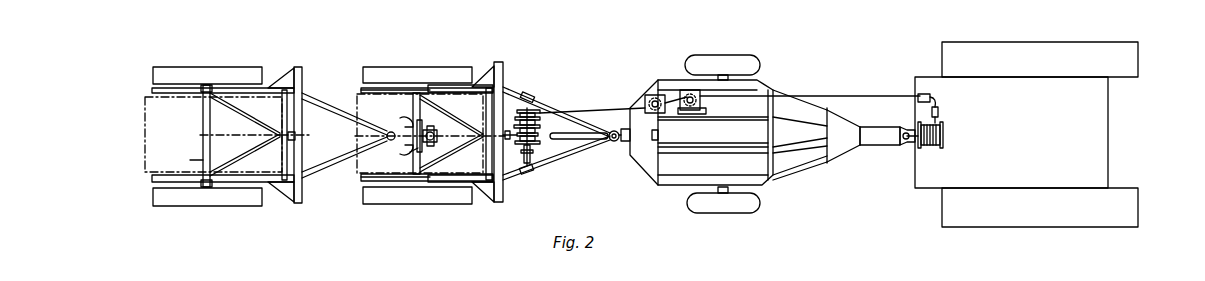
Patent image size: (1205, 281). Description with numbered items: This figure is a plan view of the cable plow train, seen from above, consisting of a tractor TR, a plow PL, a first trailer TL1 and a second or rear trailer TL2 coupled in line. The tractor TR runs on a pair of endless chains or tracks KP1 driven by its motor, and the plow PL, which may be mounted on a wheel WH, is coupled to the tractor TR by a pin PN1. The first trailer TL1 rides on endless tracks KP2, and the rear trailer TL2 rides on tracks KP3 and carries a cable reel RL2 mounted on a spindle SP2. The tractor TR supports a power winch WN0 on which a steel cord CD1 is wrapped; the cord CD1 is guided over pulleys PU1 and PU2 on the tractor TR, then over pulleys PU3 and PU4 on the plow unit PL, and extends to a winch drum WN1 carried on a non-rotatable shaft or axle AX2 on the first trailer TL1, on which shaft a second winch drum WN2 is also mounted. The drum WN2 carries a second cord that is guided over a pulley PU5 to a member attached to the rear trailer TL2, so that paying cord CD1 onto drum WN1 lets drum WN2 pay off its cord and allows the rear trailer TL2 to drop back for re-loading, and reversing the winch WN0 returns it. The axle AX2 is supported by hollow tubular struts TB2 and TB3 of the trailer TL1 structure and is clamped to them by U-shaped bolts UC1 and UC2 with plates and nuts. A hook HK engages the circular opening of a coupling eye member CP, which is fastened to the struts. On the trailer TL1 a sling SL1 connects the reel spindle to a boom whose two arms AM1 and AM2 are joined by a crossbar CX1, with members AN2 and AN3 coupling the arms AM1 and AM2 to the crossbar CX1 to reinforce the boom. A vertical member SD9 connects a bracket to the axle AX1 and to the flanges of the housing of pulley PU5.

The second or rear trailer TL2 is at (269, 119).
The endless chains or tracks KP3 is at (152, 75).
The cable reel RL2 is at (145, 138).
The spindle SP2 is at (190, 163).
The first trailer TL1 is at (436, 101).
The endless chains or tracks KP2 is at (382, 76).
The sling SL1 is at (438, 88).
The arm AM1 is at (445, 89).
The arm AM2 is at (440, 177).
The coupling member AN2 is at (487, 78).
The coupling member AN3 is at (483, 198).
The crossbar CX1 is at (504, 106).
The axle AX1 is at (408, 119).
The pulley PU5 is at (434, 128).
The vertical member SD9 is at (410, 152).
The winch drum WN1 is at (540, 109).
The winch drum WN2 is at (508, 184).
The hollow tubular strut TB3 is at (586, 122).
The hollow tubular strut TB2 is at (594, 158).
The U-shaped bolt UC2 is at (532, 99).
The U-shaped bolt UC1 is at (534, 171).
The shaft or axle AX2 is at (557, 140).
The coupling eye member CP is at (615, 129).
The hook HK is at (621, 150).
The plow PL is at (745, 132).
The pulley PU4 is at (655, 97).
The pulley PU3 is at (690, 95).
The wheel WH is at (752, 63).
The cord or rope CD1 is at (840, 93).
The pin PN1 is at (906, 143).
The tractor TR is at (1110, 129).
The endless chains or tracks KP1 is at (1127, 58).
The pulley PU2 is at (929, 88).
The pulley PU1 is at (939, 112).
The winch WN0 is at (944, 135).